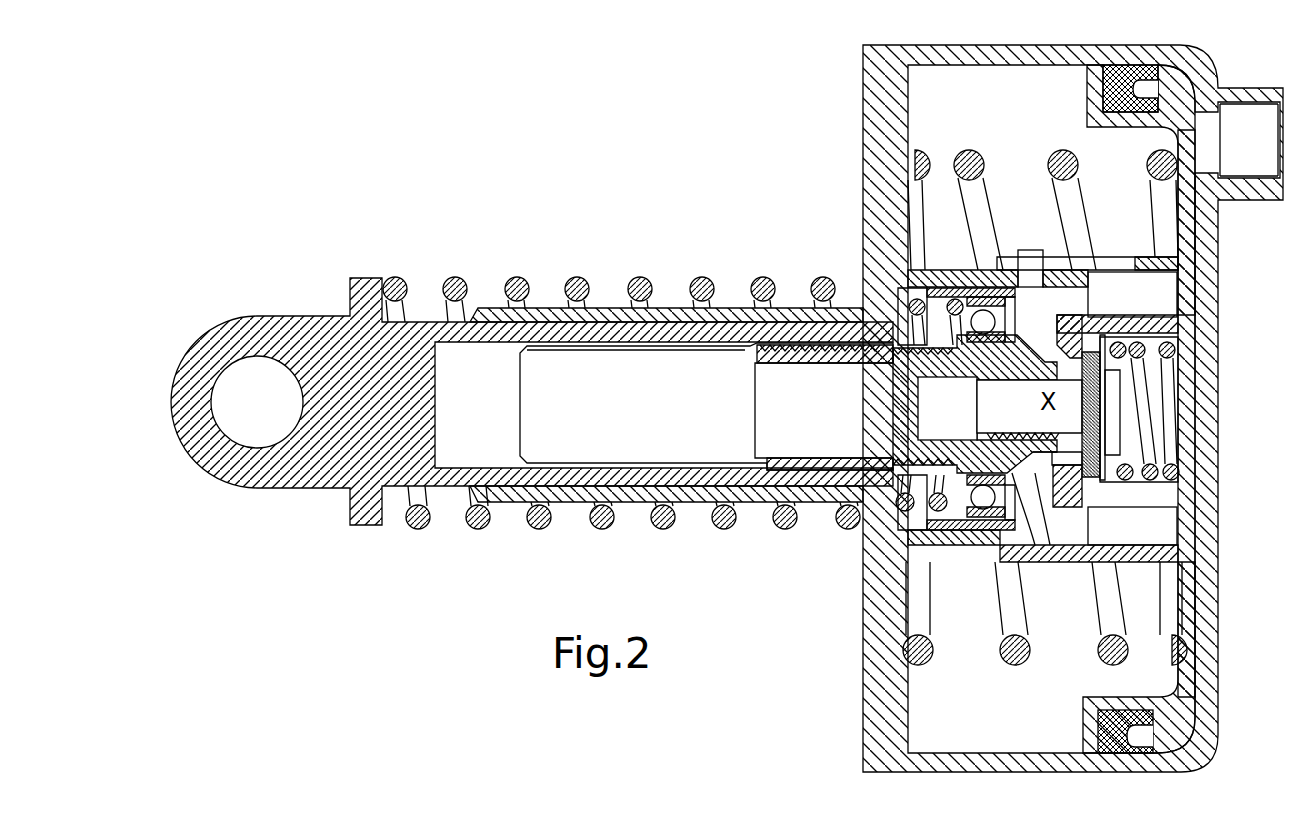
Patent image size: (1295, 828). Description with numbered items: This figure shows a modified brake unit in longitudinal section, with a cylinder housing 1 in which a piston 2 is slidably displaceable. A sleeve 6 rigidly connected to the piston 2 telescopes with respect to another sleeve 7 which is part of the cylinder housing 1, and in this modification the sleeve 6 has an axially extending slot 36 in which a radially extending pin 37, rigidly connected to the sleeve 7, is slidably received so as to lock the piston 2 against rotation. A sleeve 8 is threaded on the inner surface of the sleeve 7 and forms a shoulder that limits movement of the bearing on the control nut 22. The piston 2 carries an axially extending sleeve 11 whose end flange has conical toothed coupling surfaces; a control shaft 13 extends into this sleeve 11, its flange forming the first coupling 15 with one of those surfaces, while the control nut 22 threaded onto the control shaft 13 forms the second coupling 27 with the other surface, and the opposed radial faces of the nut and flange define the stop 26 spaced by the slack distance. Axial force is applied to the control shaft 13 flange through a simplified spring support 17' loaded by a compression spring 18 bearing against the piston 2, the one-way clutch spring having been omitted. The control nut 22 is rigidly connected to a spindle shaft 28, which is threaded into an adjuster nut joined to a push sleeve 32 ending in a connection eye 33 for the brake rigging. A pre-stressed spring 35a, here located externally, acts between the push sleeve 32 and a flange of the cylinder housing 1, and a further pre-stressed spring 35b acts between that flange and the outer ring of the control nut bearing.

The cylinder housing 1 is at (870, 132).
The piston 2 is at (1087, 108).
The sleeve 6 is at (1150, 258).
The sleeve 7 is at (922, 284).
The sleeve 8 is at (990, 290).
The sleeve 11 is at (1115, 320).
The control shaft 13 is at (893, 392).
The first coupling 15 is at (1092, 445).
The spring support 17' is at (1190, 409).
The compression spring 18 is at (1190, 325).
The control nut 22 is at (1030, 470).
The stop 26 is at (1087, 485).
The second coupling 27 is at (1055, 520).
The spindle shaft 28 is at (708, 370).
The push sleeve 32 is at (604, 326).
The connection eye 33 is at (288, 316).
The pre-stressed spring 35a is at (515, 278).
The pre-stressed spring 35b is at (964, 300).
The slot 36 is at (1077, 258).
The pin 37 is at (1030, 260).